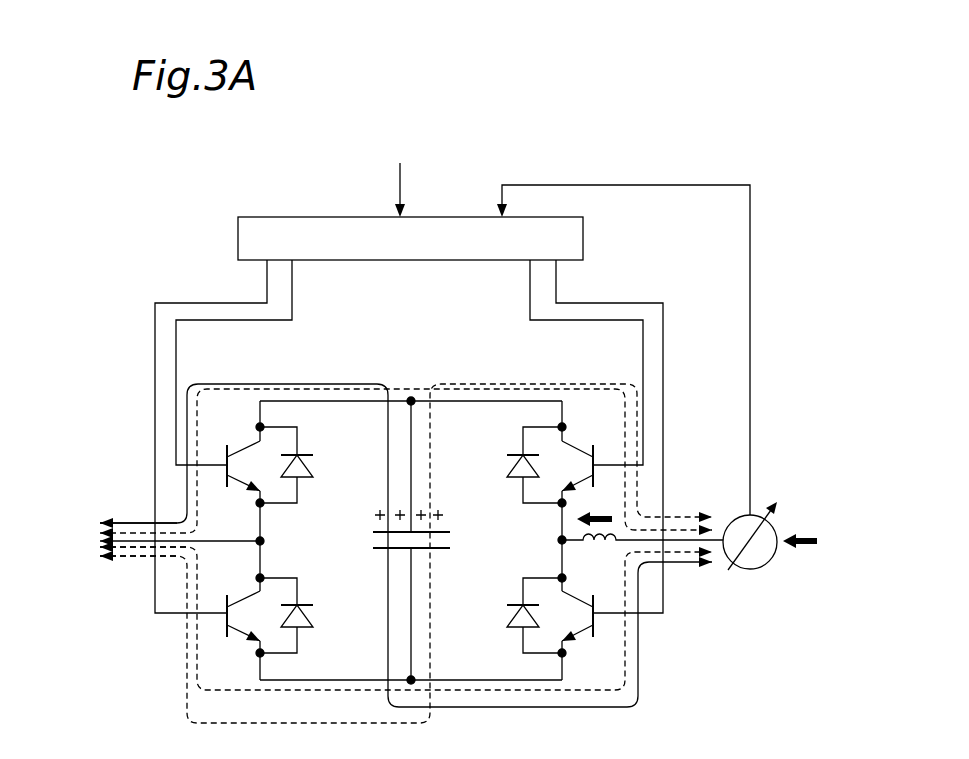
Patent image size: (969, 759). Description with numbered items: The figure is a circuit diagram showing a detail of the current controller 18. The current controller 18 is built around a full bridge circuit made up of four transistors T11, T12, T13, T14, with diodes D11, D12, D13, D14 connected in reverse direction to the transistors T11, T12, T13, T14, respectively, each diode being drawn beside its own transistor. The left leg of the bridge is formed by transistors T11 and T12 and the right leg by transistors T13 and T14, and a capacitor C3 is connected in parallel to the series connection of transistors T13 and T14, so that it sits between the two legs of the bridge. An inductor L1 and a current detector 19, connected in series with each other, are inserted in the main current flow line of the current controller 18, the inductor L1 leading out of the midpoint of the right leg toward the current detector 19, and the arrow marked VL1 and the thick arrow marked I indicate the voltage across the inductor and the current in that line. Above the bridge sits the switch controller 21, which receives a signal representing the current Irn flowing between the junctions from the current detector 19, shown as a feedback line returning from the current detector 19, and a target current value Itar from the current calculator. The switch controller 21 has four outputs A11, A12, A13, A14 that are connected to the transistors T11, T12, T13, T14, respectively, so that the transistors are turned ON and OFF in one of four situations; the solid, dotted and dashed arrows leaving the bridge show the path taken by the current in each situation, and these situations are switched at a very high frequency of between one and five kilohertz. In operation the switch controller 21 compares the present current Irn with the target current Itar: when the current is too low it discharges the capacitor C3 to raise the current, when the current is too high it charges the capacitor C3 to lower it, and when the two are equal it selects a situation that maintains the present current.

The current controller 18 is at (148, 277).
The switch controller 21 is at (583, 238).
The current detector 19 is at (748, 572).
The target current value Itar is at (402, 177).
The current flowing between junctions R and N Irn is at (650, 183).
The output of switch controller A11 is at (258, 362).
The output of switch controller A12 is at (211, 436).
The output of switch controller A13 is at (561, 362).
The output of switch controller A14 is at (609, 436).
The transistor T11 is at (250, 447).
The transistor T12 is at (250, 597).
The transistor T13 is at (569, 447).
The transistor T14 is at (577, 634).
The diode D11 is at (338, 458).
The diode D12 is at (338, 608).
The diode D13 is at (508, 456).
The diode D14 is at (508, 606).
The capacitor C3 is at (445, 532).
The inductor L1 is at (640, 556).
The inductor voltage VL1 is at (602, 512).
The output current I is at (800, 529).